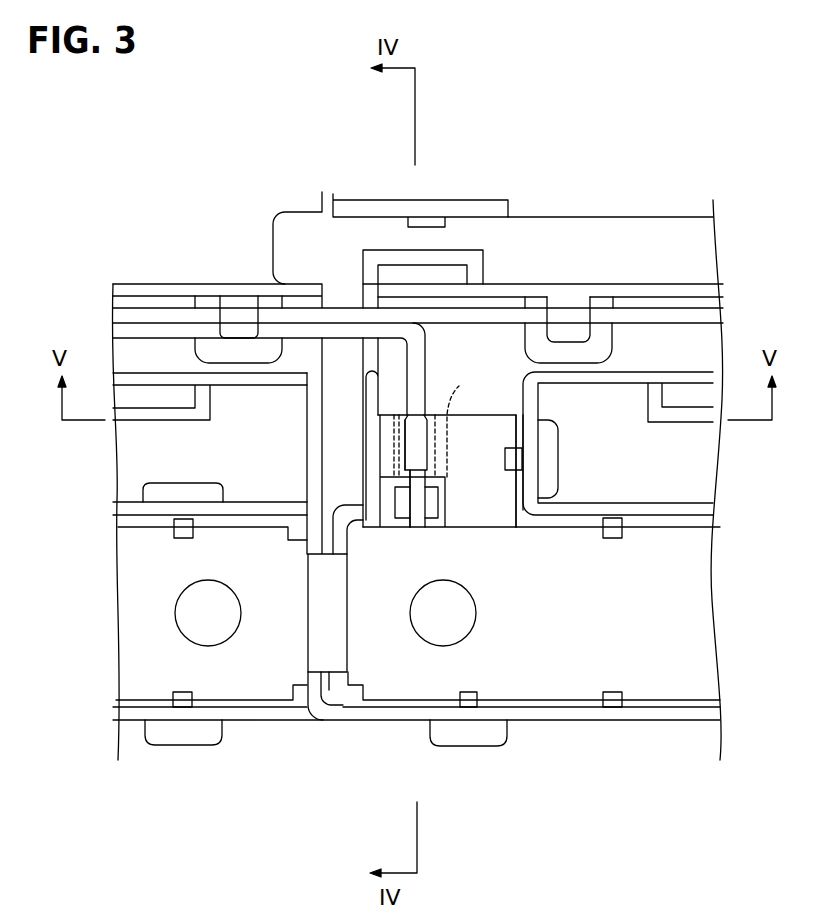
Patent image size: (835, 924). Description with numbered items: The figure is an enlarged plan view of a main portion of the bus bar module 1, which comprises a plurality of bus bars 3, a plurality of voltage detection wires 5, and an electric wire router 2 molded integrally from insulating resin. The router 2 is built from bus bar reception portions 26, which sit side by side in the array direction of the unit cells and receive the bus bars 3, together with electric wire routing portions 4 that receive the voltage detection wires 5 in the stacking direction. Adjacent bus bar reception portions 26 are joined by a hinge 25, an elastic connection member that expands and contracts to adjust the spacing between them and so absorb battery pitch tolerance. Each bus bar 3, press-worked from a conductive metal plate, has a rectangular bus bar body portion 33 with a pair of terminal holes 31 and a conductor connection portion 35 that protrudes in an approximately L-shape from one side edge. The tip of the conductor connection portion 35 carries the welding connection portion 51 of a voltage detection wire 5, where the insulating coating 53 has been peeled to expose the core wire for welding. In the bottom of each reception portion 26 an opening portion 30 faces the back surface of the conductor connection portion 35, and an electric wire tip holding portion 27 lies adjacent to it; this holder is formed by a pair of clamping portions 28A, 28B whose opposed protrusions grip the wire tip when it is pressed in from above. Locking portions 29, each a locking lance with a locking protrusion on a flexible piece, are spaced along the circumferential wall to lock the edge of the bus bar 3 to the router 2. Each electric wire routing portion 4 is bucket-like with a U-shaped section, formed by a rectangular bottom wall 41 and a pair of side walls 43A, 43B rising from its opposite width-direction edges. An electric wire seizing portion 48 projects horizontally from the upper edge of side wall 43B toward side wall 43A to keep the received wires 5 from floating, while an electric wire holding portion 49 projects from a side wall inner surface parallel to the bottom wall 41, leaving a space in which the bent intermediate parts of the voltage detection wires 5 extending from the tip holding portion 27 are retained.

The bus bar module 1 is at (261, 154).
The electric wire router 2 is at (634, 145).
The bus bar 3 is at (416, 659).
The electric wire routing portion 4 is at (413, 357).
The voltage detection wire 5 is at (418, 220).
The hinge 25 is at (320, 606).
The bus bar reception portion 26 is at (416, 801).
The electric wire tip holding portion 27 is at (487, 345).
The clamping portion 28A is at (452, 528).
The clamping portion 28B is at (385, 497).
The locking portion 29 is at (510, 445).
The opening portion 30 is at (464, 419).
The terminal hole 31 is at (230, 638).
The bus bar body portion 33 is at (583, 650).
The conductor connection portion 35 is at (385, 445).
The bottom wall 41 is at (450, 350).
The side wall 43A is at (250, 375).
The side wall 43B is at (245, 287).
The electric wire seizing portion 48 is at (568, 312).
The electric wire holding portion 49 is at (228, 318).
The welding connection portion 51 is at (427, 446).
The insulating coating 53 is at (410, 500).